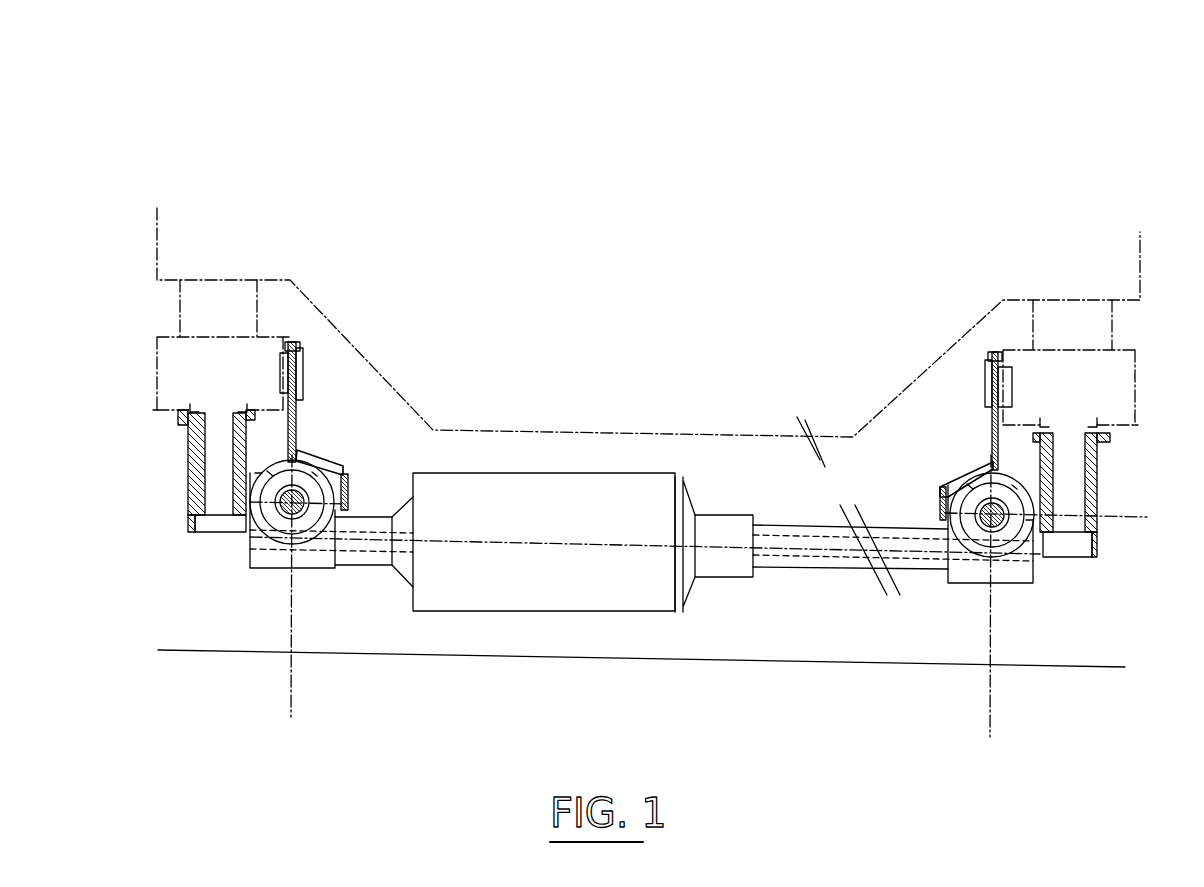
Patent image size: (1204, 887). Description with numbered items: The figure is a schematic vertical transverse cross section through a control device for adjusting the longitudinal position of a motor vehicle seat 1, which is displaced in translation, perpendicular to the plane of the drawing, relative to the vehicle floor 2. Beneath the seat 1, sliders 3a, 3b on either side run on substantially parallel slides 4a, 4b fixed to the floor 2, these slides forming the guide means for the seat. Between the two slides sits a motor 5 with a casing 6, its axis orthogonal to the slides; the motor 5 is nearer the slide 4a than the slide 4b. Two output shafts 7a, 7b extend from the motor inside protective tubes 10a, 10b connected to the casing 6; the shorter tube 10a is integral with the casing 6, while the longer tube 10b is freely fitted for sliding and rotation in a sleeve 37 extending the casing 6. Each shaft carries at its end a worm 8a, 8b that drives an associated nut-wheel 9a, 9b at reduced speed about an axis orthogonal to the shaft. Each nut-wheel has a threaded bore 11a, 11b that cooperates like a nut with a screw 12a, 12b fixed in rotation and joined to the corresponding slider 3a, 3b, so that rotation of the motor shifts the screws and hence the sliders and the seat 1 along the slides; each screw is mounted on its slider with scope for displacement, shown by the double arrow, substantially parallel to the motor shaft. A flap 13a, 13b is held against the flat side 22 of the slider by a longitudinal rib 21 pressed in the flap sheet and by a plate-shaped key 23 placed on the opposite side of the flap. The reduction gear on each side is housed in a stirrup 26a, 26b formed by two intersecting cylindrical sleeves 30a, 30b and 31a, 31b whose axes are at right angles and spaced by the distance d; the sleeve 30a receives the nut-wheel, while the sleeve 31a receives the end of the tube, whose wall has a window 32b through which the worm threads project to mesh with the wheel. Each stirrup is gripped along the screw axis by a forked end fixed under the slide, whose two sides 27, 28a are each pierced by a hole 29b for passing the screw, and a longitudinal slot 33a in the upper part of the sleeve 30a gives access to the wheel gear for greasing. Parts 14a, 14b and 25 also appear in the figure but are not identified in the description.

The seat 1 is at (157, 248).
The floor 2 is at (1093, 667).
The slider 3a is at (170, 347).
The slider 3b is at (1117, 367).
The slide 4a is at (190, 430).
The slide 4b is at (1103, 420).
The motor 5 is at (582, 505).
The casing 6 is at (465, 600).
The output shaft 7a is at (365, 545).
The output shaft 7b is at (928, 548).
The worm 8a is at (290, 510).
The worm 8b is at (1005, 525).
The nut-wheel 9a is at (366, 494).
The nut-wheel 9b is at (955, 497).
The protective tube 10a is at (370, 517).
The protective tube 10b is at (800, 568).
The threaded bore 11a is at (278, 448).
The threaded bore 11b is at (967, 480).
The screw 12a is at (253, 560).
The screw 12b is at (1037, 557).
The flap 13a is at (298, 336).
The flap 13b is at (999, 355).
The left clamping screw 14a is at (296, 340).
The right clamping screw 14b is at (1003, 335).
The longitudinal rib 21 is at (283, 395).
The side of the slider 22 is at (278, 405).
The key 23 is at (293, 342).
The arm 25 is at (345, 462).
The stirrup 26a is at (303, 576).
The stirrup 26b is at (968, 587).
The side of the forked end 27 is at (188, 487).
The side of the forked end 28a is at (253, 468).
The hole 29b is at (1027, 483).
The cylindrical sleeve 30a is at (272, 487).
The cylindrical sleeve 30b is at (955, 510).
The cylindrical sleeve 31a is at (278, 530).
The cylindrical sleeve 31b is at (1000, 585).
The window 32b is at (987, 480).
The longitudinal slot 33a is at (326, 445).
The sleeve 37 is at (733, 578).